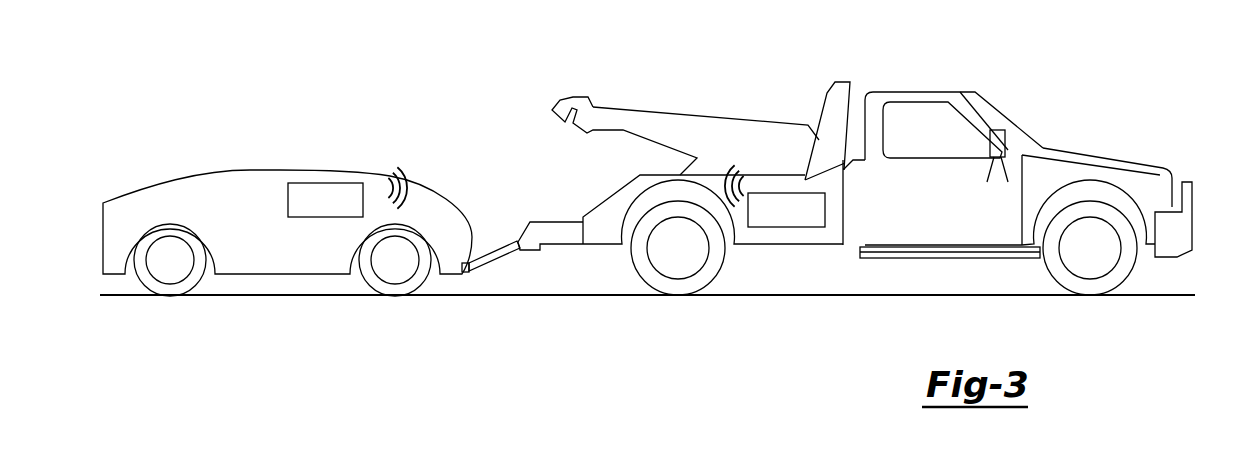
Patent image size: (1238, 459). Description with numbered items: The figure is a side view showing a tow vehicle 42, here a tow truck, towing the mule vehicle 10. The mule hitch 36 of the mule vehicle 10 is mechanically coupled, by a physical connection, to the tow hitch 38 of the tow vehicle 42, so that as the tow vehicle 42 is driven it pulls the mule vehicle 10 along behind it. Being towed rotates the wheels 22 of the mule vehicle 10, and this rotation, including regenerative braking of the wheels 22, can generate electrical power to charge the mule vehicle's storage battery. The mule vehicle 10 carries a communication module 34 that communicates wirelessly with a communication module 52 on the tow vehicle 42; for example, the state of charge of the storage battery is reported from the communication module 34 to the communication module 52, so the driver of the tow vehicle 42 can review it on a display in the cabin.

The mule vehicle 10 is at (287, 226).
The wheels 22 is at (350, 289).
The communication module 34 is at (327, 183).
The mule hitch 36 is at (464, 272).
The tow hitch 38 is at (500, 266).
The tow vehicle 42 is at (872, 174).
The communication module 52 is at (785, 193).